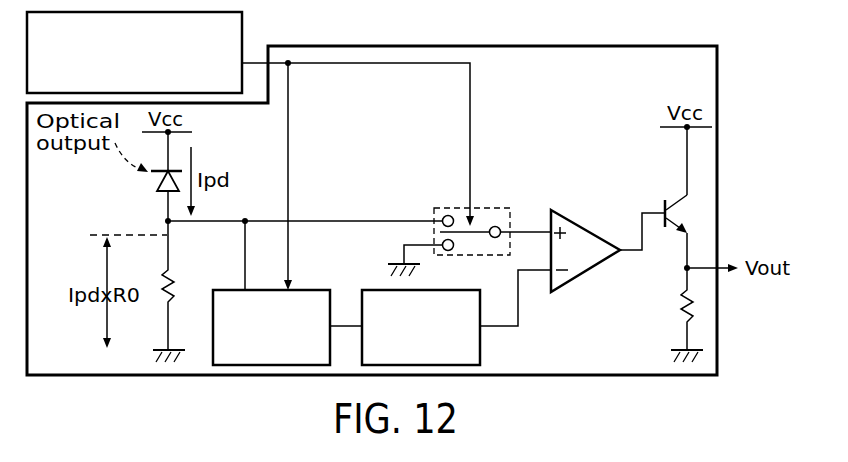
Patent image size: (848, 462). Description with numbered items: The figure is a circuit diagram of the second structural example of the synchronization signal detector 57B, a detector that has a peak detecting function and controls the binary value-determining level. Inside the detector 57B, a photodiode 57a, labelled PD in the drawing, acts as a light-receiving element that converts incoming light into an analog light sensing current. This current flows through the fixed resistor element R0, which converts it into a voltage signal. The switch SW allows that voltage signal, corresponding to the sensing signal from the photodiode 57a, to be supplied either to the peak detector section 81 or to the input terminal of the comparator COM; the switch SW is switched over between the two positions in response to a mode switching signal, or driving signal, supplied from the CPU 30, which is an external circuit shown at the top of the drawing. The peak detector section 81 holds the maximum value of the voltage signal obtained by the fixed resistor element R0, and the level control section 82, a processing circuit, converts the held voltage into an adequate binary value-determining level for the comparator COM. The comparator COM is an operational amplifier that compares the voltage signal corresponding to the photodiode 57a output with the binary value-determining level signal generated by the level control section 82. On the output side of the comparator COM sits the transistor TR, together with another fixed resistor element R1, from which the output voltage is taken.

The CPU 30 is at (245, 32).
The photodiode 57a is at (132, 196).
The synchronization signal detector 57B is at (720, 167).
The peak detector section 81 is at (317, 287).
The level control section 82 is at (482, 346).
The photodiode PD is at (157, 179).
The fixed resistor element R0 is at (186, 279).
The fixed resistor element R1 is at (666, 310).
The switch SW is at (437, 205).
The comparator COM is at (550, 216).
The transistor TR is at (678, 192).